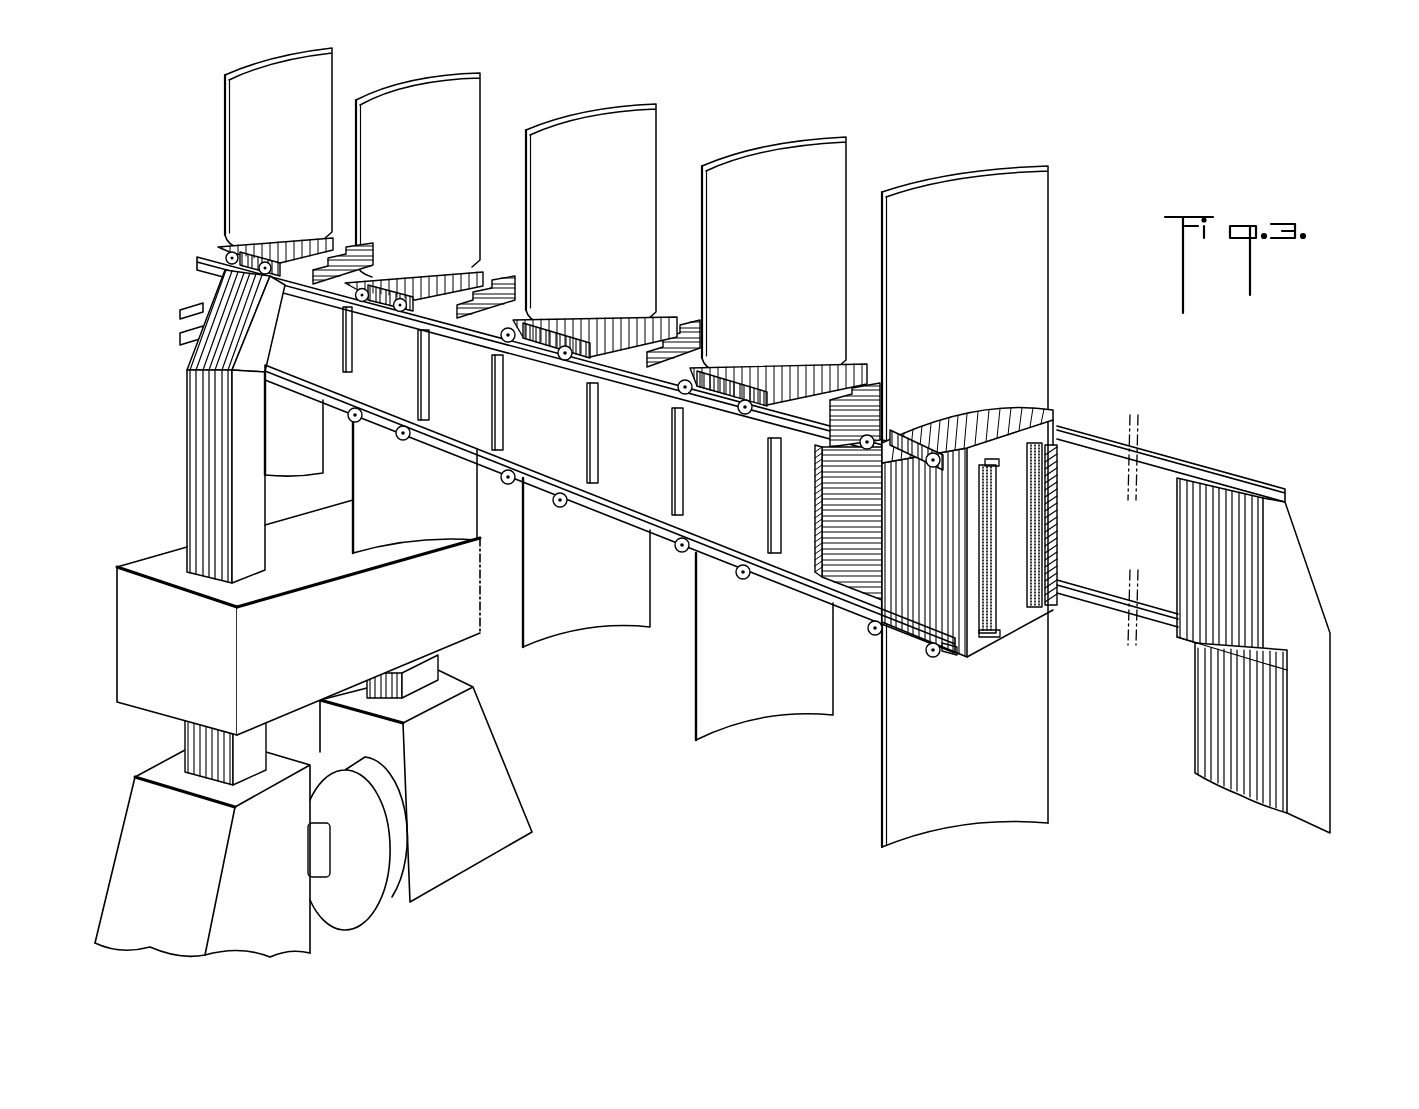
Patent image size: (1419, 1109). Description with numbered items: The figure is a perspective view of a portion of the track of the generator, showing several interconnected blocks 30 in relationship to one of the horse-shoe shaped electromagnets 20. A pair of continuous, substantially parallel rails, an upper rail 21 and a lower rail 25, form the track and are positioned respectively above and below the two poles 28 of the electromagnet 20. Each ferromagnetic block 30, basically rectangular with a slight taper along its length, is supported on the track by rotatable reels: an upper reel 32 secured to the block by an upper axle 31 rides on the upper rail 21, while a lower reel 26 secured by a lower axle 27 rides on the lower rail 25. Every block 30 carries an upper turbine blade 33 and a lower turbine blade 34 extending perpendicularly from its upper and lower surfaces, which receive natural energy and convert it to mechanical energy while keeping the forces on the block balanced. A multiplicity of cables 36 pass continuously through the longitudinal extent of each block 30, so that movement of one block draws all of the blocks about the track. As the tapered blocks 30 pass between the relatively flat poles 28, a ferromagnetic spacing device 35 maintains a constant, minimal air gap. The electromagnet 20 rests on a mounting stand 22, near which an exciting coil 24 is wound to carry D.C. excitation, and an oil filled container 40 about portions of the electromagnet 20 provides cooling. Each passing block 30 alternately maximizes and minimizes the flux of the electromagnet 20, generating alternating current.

The electromagnet 20 is at (751, 499).
The upper rail 21 is at (1102, 443).
The mounting stand 22 is at (478, 738).
The exciting coil 24 is at (385, 838).
The lower rail 25 is at (1102, 597).
The lower reel 26 is at (685, 553).
The lower axle 27 is at (952, 655).
The pole 28 is at (187, 360).
The block 30 is at (1008, 487).
The upper axle 31 is at (943, 440).
The upper reel 32 is at (928, 443).
The upper turbine blade 33 is at (430, 92).
The lower turbine blade 34 is at (695, 670).
The spacing device 35 is at (1057, 517).
The cable 36 is at (852, 402).
The oil filled container 40 is at (142, 562).